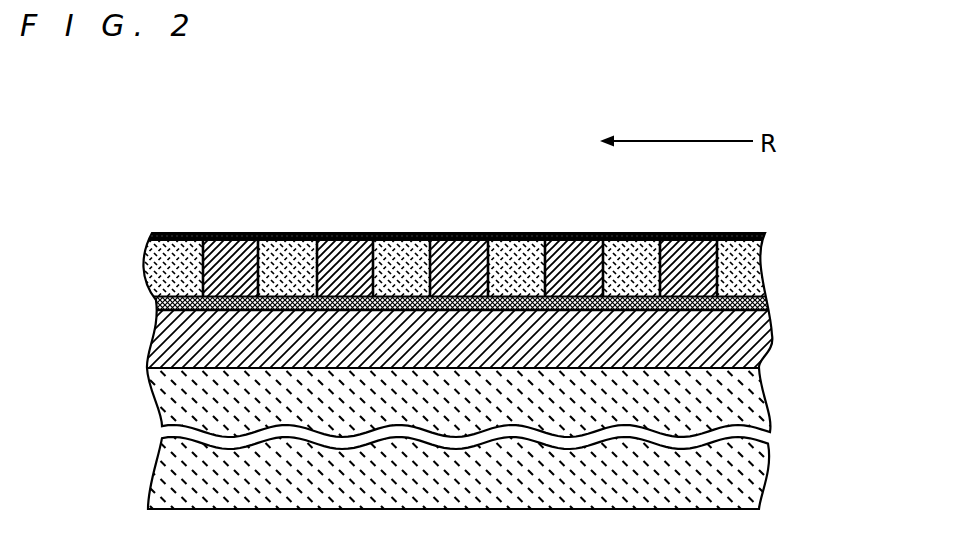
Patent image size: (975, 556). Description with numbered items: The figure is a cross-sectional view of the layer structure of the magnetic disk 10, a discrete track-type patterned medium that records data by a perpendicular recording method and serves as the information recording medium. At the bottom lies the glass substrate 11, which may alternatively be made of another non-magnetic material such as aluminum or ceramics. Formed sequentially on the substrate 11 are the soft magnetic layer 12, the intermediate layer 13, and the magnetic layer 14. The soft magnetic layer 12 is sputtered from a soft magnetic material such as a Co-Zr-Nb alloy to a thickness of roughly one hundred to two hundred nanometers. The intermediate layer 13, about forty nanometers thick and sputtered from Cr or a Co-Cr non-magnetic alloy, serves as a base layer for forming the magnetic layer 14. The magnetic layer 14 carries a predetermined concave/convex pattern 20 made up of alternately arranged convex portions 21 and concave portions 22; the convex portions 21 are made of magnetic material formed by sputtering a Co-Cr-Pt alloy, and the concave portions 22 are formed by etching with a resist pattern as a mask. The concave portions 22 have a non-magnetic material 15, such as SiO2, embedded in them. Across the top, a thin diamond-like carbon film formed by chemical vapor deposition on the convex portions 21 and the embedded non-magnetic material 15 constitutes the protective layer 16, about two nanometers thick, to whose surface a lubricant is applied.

The magnetic disk 10 is at (481, 118).
The glass substrate 11 is at (748, 402).
The soft magnetic layer 12 is at (768, 343).
The intermediate layer 13 is at (768, 302).
The magnetic layer 14 is at (758, 269).
The non-magnetic material 15 is at (632, 258).
The protective layer 16 is at (743, 234).
The concave/convex pattern 20 is at (491, 215).
The convex portions 21 is at (345, 258).
The concave portions 22 is at (290, 256).